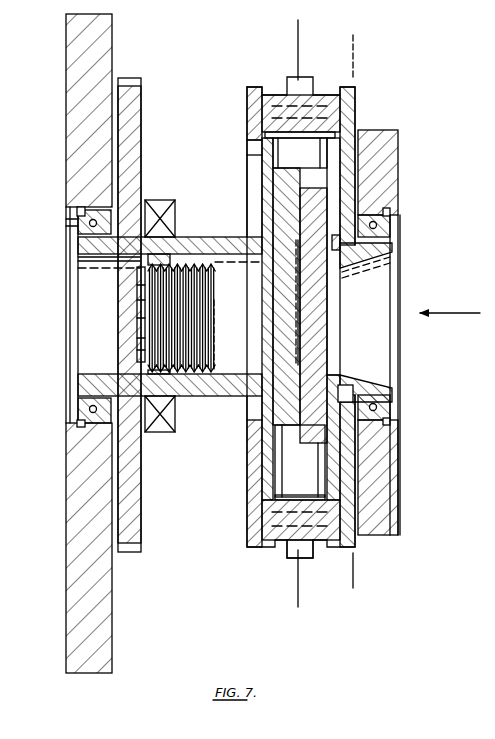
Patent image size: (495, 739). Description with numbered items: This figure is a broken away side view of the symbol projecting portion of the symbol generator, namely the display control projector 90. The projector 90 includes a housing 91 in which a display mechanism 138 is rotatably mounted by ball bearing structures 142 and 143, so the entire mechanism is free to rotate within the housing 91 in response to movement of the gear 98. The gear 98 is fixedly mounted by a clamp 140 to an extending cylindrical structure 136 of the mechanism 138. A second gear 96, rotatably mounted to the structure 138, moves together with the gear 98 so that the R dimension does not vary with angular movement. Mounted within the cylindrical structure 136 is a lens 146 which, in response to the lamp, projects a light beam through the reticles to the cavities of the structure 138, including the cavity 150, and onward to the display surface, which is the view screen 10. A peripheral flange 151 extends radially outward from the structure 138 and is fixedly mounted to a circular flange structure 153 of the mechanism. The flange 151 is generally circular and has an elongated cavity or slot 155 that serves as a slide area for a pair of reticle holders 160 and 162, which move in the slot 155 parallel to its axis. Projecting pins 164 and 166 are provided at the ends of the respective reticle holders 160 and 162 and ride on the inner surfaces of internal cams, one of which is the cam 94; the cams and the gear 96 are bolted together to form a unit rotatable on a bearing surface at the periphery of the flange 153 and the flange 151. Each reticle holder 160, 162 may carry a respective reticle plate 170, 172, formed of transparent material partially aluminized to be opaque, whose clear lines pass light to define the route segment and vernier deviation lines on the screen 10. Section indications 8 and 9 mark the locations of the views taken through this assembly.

The section line 8- 8 is at (298, 40).
The section line 9- 9 is at (353, 62).
The solenoid valve assembly 10 is at (242, 178).
The mounting frame 90 is at (62, 367).
The frame plate 91 is at (105, 38).
The housing cap 94 is at (255, 126).
The end boss 96 is at (302, 559).
The inner plate 98 is at (140, 553).
The sleeve / end block 136 is at (247, 399).
The sleeve 138 is at (210, 233).
The coil 140 is at (158, 433).
The retaining ring 142 is at (97, 222).
The retaining ring 143 is at (392, 219).
The threaded adjusting stud 146 is at (152, 300).
The insert plate 150 is at (134, 328).
The diffuser cone 151 is at (343, 253).
The lower chamber 153 is at (252, 493).
The tube wall 155 is at (320, 370).
The inner wall 160 is at (252, 470).
The end cap 162 is at (315, 462).
The body member 164 is at (254, 418).
The outer wall 166 is at (343, 196).
The plunger 170 is at (317, 328).
The gap 172 is at (291, 327).